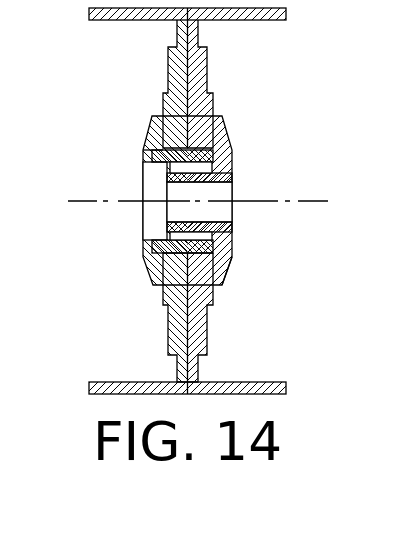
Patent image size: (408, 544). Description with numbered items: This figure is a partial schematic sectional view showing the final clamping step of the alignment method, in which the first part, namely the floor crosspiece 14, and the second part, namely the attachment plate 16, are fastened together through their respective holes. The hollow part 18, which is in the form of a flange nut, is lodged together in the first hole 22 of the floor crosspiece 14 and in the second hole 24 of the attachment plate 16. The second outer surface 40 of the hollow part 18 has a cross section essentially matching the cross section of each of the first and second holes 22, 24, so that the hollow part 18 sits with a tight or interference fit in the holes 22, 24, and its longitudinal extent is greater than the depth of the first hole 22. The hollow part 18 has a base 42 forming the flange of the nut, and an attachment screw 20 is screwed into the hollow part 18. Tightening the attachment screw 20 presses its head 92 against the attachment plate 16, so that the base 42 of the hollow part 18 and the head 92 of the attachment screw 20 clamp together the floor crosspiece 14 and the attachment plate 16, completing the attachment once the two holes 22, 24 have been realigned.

The floor crosspiece 14 is at (166, 338).
The attachment plate 16 is at (209, 337).
The hollow part 18 is at (148, 127).
The attachment screw 20 is at (228, 124).
The first hole 22 is at (143, 154).
The second hole 24 is at (235, 148).
The second outer surface 40 is at (195, 253).
The base 42 is at (147, 270).
The head 92 is at (228, 266).